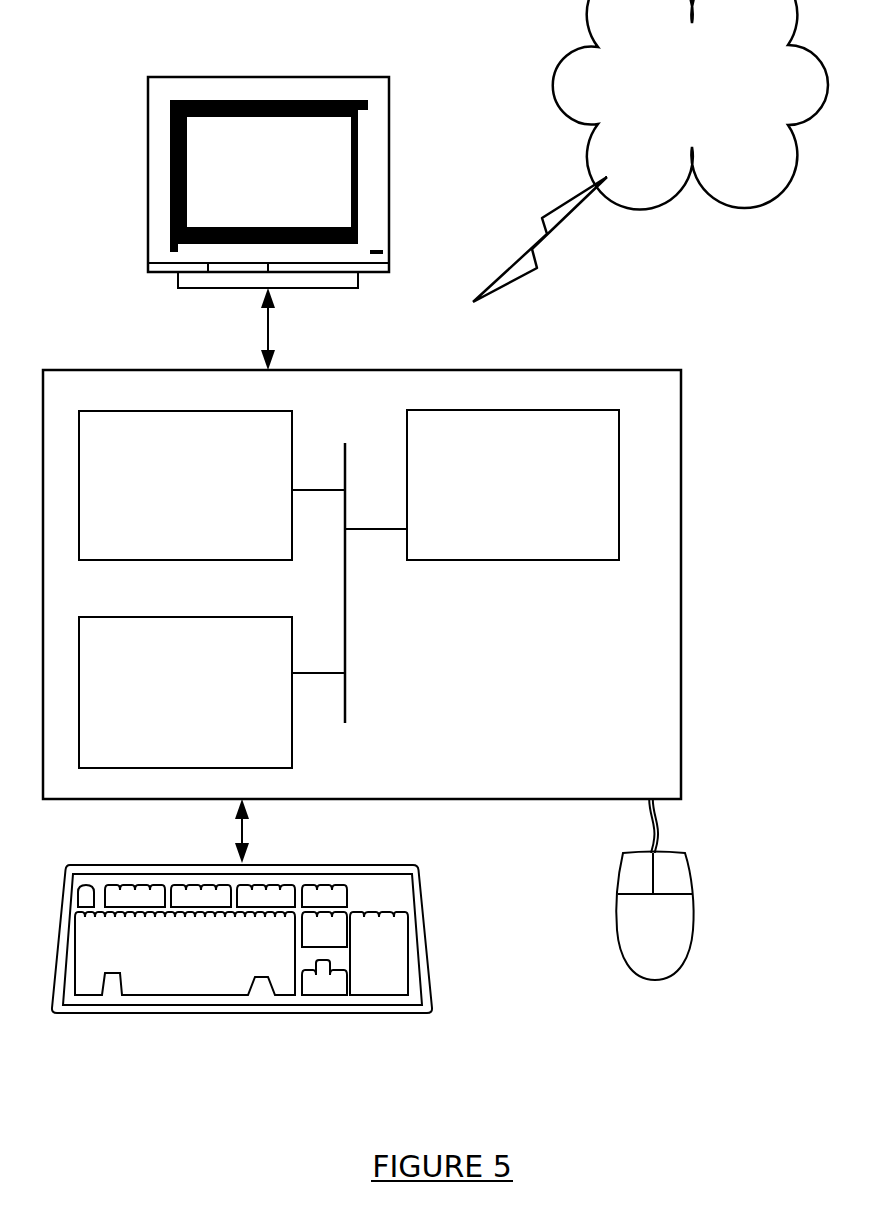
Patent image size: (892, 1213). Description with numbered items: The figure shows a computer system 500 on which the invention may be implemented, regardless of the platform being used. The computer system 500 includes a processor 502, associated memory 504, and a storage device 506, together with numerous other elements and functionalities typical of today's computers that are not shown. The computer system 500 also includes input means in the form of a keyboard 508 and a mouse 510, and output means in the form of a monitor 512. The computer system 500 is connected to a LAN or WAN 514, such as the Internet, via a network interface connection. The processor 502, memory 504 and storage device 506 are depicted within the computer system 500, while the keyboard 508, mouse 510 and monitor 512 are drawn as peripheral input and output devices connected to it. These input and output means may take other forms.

The computer system 500 is at (716, 593).
The processor 502 is at (490, 501).
The associated memory 504 is at (164, 497).
The storage device 506 is at (161, 704).
The keyboard 508 is at (156, 976).
The mouse 510 is at (631, 937).
The monitor 512 is at (246, 179).
The LAN or WAN 514 is at (663, 106).